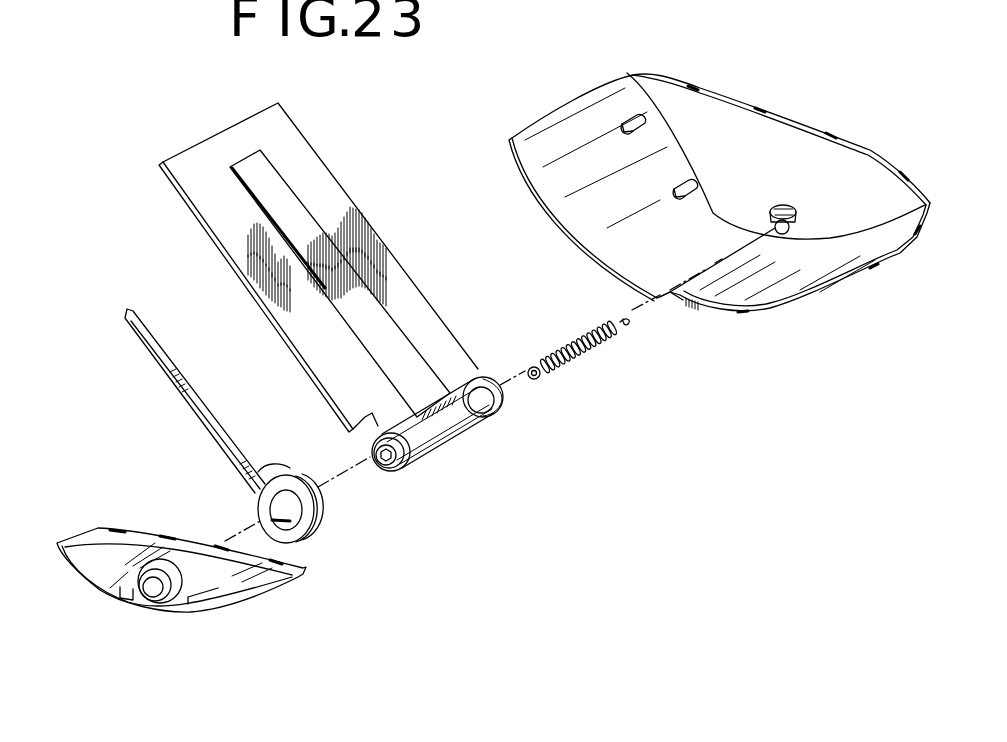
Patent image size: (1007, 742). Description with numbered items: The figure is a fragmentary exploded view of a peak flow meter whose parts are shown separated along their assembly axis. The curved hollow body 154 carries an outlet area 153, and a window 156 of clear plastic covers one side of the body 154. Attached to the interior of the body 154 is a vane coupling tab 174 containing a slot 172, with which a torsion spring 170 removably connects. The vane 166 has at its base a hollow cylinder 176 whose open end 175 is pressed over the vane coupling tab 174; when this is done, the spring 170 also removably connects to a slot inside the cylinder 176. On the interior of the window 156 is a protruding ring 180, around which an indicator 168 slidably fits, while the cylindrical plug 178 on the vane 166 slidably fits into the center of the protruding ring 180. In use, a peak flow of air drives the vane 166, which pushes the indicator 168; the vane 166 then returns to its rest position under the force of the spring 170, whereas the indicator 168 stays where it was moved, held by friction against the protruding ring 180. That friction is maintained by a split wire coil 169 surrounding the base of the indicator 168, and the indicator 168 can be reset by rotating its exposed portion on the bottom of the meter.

The outlet area 153 is at (700, 177).
The curved hollow body 154 is at (847, 160).
The window 156 is at (220, 578).
The vane 166 is at (403, 313).
The indicator 168 is at (177, 393).
The split wire coil 169 is at (255, 490).
The torsion spring 170 is at (588, 357).
The slot 172 is at (785, 205).
The vane coupling tab 174 is at (782, 234).
The open end 175 is at (503, 404).
The hollow cylinder 176 is at (468, 425).
The cylindrical plug 178 is at (395, 463).
The protruding ring 180 is at (142, 594).